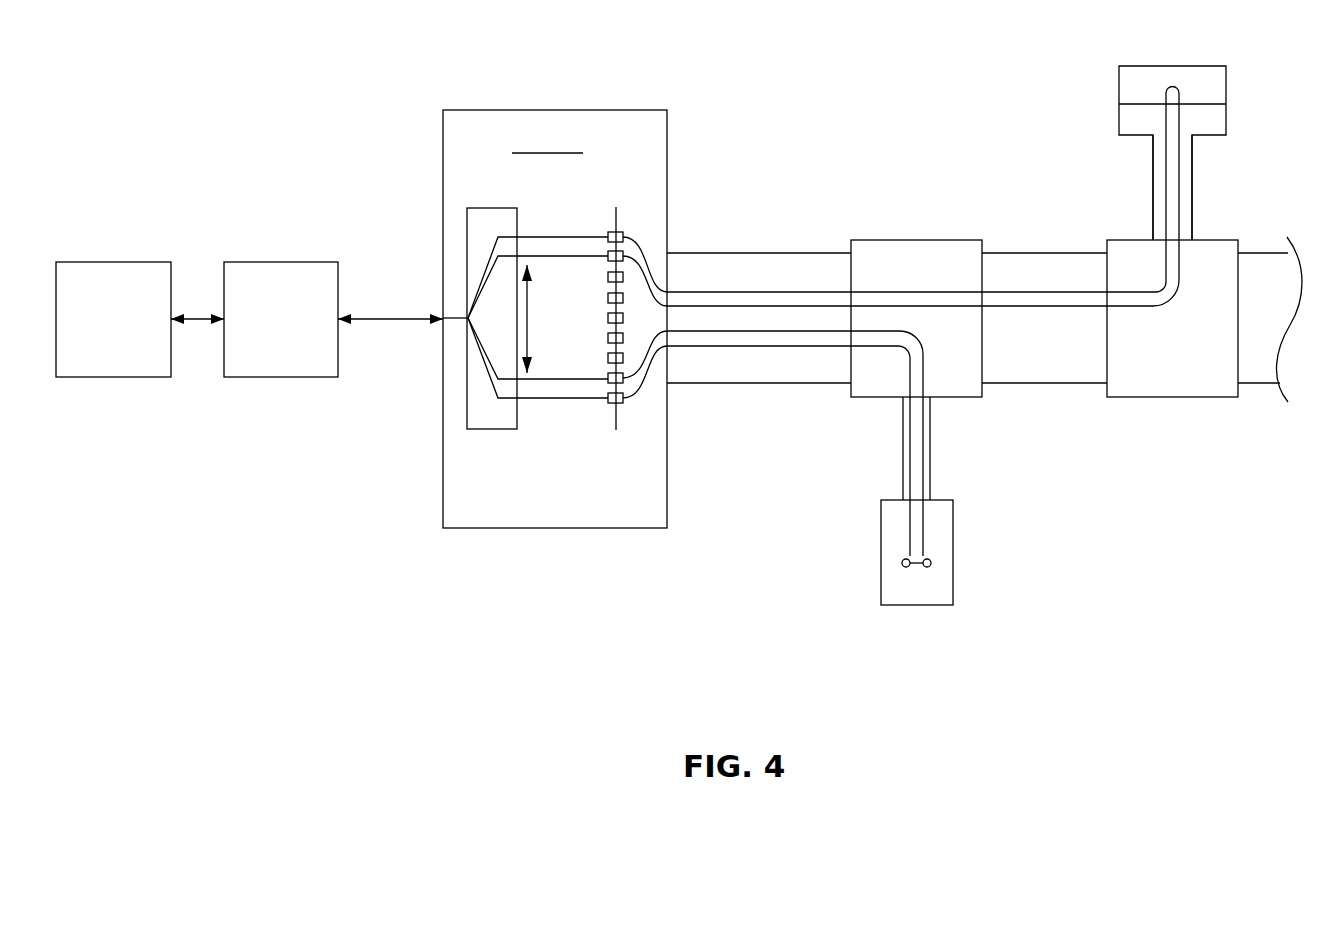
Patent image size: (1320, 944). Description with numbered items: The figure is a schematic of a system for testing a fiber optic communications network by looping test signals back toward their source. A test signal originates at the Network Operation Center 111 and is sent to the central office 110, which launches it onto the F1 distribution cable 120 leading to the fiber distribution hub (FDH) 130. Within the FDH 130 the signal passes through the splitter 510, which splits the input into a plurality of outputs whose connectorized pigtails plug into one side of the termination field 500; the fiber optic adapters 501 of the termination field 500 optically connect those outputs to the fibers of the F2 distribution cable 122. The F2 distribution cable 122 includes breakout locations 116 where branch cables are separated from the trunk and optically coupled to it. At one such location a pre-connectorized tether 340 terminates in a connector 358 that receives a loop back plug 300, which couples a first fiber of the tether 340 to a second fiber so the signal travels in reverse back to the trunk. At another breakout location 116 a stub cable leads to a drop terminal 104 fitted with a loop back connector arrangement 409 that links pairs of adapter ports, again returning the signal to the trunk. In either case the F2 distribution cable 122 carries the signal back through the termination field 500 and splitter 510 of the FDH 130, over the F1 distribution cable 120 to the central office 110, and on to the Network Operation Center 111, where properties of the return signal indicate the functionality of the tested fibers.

The Network Operation Center 111 is at (127, 262).
The central office 110 is at (294, 262).
The F1 distribution cable 120 is at (395, 320).
The fiber distribution hub (FDH) 130 is at (558, 528).
The splitter 510 is at (493, 207).
The termination field 500 is at (617, 215).
The fiber optic adapters 501 is at (627, 235).
The F2 distribution cable 122 is at (757, 253).
The breakout location 116 is at (917, 239).
The loop back plug 300 is at (1226, 82).
The connector 358 is at (1226, 120).
The tether 340 is at (1192, 213).
The drop terminal 104 is at (953, 565).
The loop back connector arrangement 409 is at (913, 568).